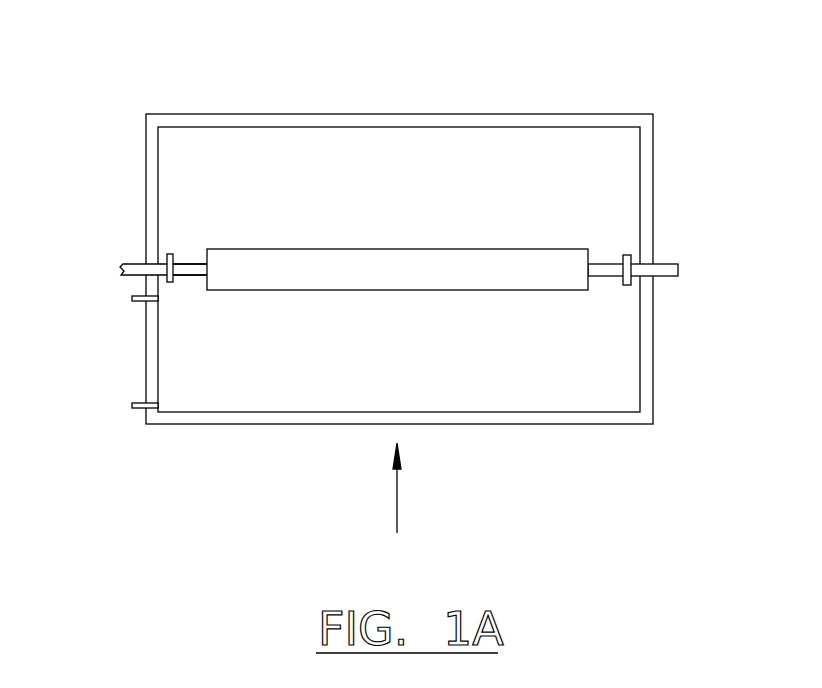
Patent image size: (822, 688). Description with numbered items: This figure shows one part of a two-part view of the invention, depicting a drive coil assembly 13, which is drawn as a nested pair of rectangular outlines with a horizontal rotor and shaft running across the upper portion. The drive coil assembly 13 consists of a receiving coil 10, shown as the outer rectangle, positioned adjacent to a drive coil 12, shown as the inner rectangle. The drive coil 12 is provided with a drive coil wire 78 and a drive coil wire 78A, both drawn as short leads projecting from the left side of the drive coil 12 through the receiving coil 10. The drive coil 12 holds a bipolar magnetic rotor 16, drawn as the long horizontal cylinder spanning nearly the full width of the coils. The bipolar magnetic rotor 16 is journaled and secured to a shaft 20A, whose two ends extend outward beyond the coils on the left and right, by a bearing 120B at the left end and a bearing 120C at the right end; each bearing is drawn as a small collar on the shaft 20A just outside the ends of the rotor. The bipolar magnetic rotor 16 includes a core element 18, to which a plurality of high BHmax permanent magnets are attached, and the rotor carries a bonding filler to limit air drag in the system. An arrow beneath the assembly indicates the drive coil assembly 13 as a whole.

The receiving coil 10 is at (592, 420).
The drive coil 12 is at (247, 383).
The drive coil assembly 13 is at (396, 503).
The bipolar magnetic rotor 16 is at (402, 268).
The core element 18 is at (205, 263).
The shaft 20A is at (130, 265).
The drive coil wire 78 is at (132, 407).
The drive coil wire 78A is at (130, 297).
The bearing 120B is at (164, 257).
The bearing 120C is at (629, 263).